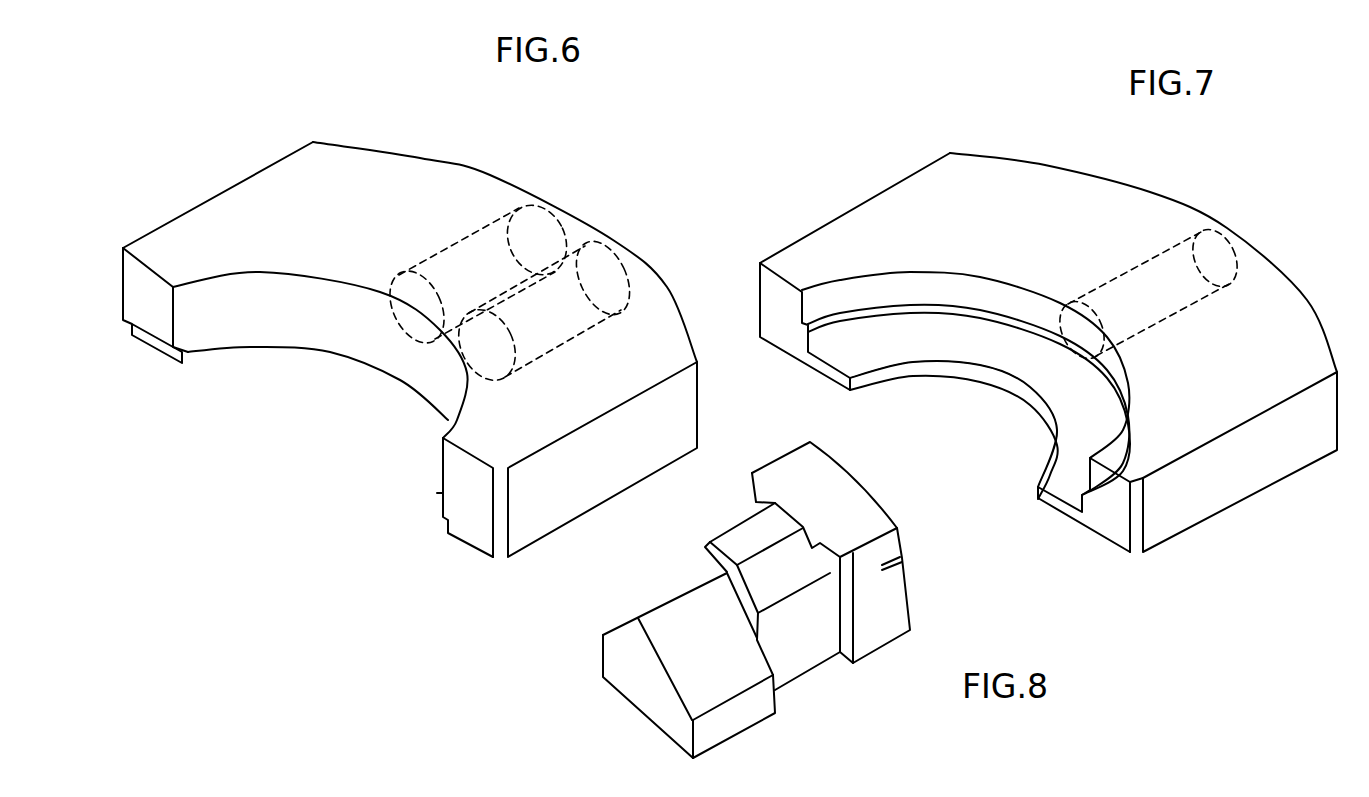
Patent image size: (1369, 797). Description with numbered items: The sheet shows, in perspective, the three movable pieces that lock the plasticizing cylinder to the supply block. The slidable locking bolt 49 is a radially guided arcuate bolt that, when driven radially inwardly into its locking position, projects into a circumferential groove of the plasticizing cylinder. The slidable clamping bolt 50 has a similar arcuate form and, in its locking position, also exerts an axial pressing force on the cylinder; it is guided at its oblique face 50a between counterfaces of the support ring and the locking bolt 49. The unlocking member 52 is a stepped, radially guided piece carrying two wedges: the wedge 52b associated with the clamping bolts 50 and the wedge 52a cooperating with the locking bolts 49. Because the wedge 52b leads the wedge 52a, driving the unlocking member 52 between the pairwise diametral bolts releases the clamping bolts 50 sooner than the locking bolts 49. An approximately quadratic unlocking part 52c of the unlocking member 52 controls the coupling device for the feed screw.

In FIG. 6, the locking bolt 49 is at (495, 173).
In FIG. 7, the clamping bolt 50 is at (1158, 188).
In FIG. 7, the oblique face 50a is at (1030, 357).
In FIG. 8, the unlocking member 52 is at (713, 609).
In FIG. 8, the wedge 52a is at (640, 674).
In FIG. 8, the wedge 52b is at (711, 565).
In FIG. 8, the unlocking part 52c is at (763, 502).